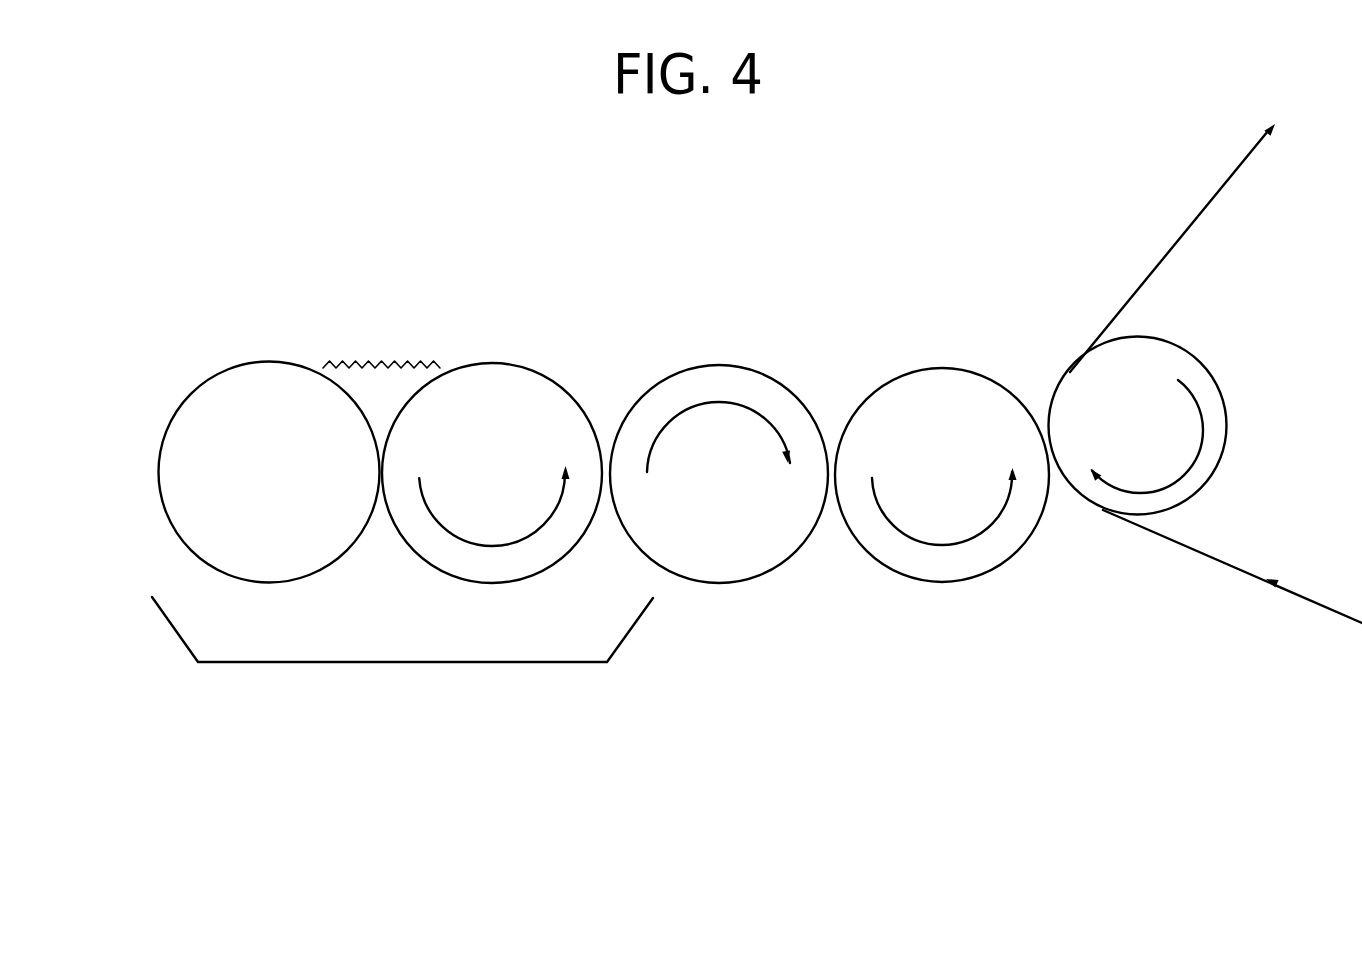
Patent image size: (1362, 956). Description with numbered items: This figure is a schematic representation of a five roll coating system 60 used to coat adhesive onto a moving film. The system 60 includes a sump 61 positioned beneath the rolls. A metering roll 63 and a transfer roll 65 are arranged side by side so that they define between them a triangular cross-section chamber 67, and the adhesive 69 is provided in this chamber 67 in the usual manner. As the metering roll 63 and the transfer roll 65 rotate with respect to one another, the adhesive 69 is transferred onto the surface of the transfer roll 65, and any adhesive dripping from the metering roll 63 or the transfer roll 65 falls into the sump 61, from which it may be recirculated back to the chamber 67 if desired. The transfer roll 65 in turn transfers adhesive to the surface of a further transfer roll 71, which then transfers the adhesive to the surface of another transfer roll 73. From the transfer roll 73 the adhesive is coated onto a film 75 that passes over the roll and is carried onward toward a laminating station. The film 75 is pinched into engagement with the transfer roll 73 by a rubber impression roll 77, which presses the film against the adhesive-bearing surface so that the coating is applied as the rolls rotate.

The five roll coating system 60 is at (245, 721).
The sump 61 is at (422, 660).
The metering roll 63 is at (223, 387).
The transfer roll 65 is at (523, 387).
The triangular cross-section chamber 67 is at (380, 392).
The adhesive 69 is at (402, 387).
The transfer roll 71 is at (797, 398).
The transfer roll 73 is at (922, 387).
The film 75 is at (1191, 245).
The rubber impression roll 77 is at (1178, 362).